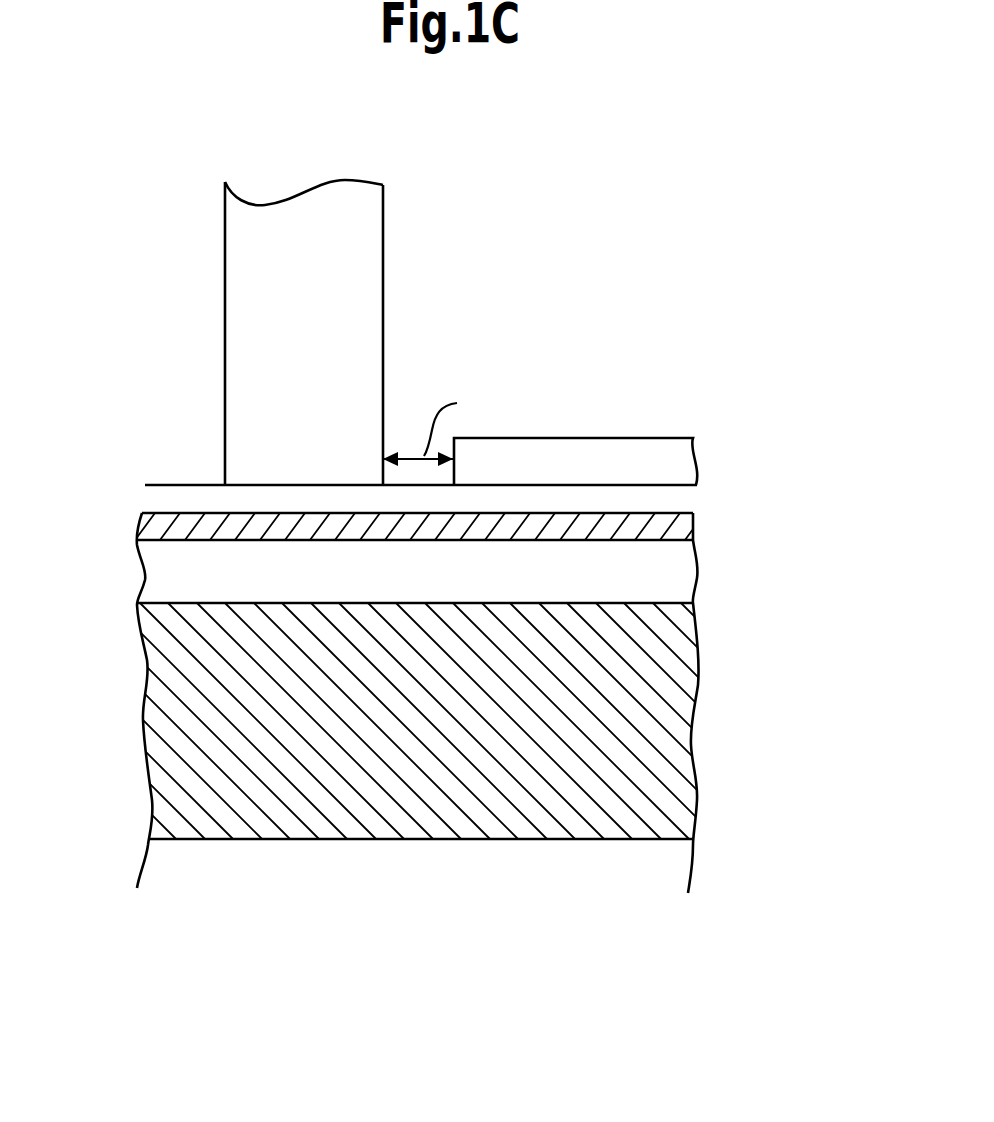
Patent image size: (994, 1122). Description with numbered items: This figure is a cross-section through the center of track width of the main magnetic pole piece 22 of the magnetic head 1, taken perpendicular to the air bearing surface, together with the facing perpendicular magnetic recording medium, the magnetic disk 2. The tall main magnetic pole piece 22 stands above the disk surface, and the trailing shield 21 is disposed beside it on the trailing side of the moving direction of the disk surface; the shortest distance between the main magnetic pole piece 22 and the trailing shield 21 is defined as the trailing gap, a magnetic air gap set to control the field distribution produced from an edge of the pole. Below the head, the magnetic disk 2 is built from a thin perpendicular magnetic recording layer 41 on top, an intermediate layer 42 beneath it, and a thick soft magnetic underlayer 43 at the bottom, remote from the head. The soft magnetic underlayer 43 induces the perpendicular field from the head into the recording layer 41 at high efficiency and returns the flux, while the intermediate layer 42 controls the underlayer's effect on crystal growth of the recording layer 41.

The magnetic head 1 is at (118, 198).
The magnetic disk 2 is at (82, 512).
The trailing shield 21 is at (613, 462).
The main magnetic pole piece 22 is at (340, 275).
The perpendicular magnetic recording layer 41 is at (613, 530).
The intermediate layer 42 is at (613, 580).
The soft magnetic underlayer 43 is at (613, 727).